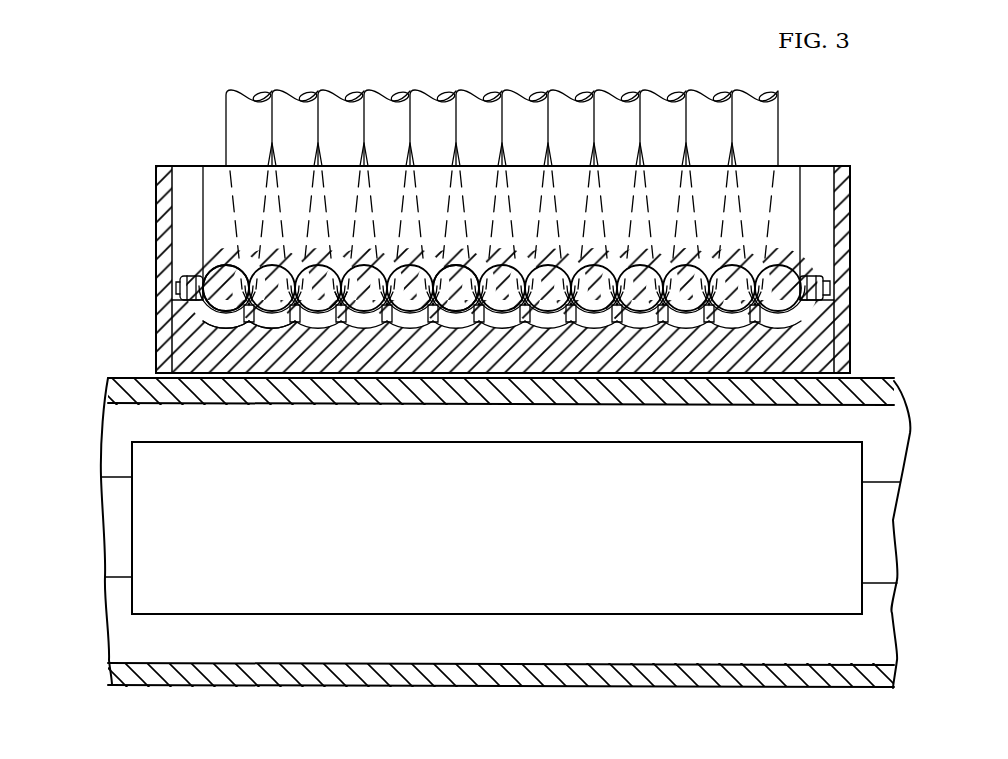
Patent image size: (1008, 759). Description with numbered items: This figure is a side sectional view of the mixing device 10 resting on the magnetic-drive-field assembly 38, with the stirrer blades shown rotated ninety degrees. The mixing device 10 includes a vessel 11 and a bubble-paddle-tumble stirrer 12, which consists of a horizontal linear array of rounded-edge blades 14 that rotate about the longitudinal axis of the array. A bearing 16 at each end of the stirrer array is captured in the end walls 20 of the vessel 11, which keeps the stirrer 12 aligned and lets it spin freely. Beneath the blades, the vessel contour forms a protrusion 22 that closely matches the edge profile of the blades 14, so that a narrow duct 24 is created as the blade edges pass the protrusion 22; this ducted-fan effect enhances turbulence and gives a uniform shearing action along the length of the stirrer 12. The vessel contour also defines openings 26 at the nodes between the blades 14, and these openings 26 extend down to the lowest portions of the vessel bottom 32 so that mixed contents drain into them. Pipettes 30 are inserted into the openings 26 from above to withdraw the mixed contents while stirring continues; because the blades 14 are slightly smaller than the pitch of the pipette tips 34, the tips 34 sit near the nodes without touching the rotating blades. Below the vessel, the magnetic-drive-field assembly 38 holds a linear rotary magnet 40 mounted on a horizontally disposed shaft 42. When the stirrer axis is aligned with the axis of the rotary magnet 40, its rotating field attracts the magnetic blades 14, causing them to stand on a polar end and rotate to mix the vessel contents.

The mixing device 10 is at (155, 162).
The vessel 11 is at (852, 202).
The bubble-paddle-tumble stirrer 12 is at (220, 260).
The rounded-edge blades 14 is at (452, 306).
The bearing 16 is at (195, 272).
The end walls 20 is at (156, 223).
The protrusion 22 is at (200, 337).
The narrow duct 24 is at (198, 320).
The openings 26 is at (258, 326).
The pipettes 30 is at (630, 92).
The vessel bottom 32 is at (295, 307).
The pipette tips 34 is at (343, 318).
The magnetic-drive-field assembly 38 is at (100, 639).
The linear rotary magnet 40 is at (150, 555).
The shaft 42 is at (117, 518).